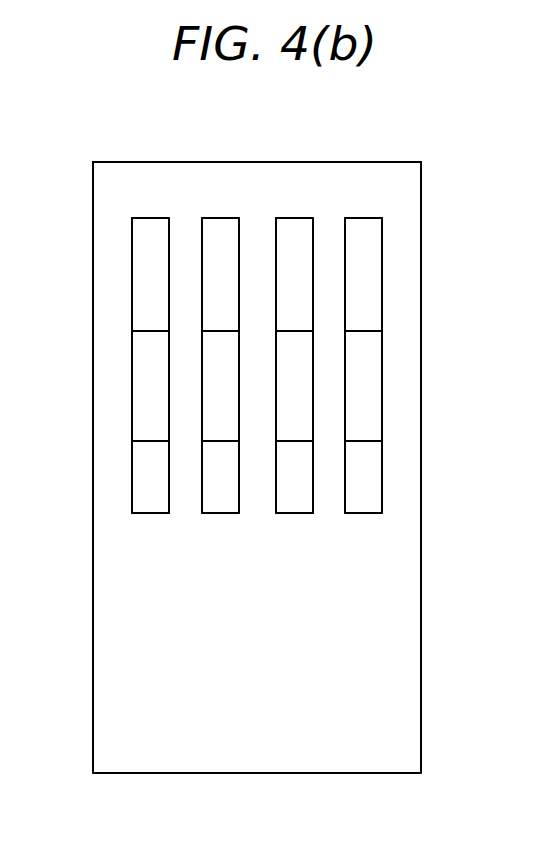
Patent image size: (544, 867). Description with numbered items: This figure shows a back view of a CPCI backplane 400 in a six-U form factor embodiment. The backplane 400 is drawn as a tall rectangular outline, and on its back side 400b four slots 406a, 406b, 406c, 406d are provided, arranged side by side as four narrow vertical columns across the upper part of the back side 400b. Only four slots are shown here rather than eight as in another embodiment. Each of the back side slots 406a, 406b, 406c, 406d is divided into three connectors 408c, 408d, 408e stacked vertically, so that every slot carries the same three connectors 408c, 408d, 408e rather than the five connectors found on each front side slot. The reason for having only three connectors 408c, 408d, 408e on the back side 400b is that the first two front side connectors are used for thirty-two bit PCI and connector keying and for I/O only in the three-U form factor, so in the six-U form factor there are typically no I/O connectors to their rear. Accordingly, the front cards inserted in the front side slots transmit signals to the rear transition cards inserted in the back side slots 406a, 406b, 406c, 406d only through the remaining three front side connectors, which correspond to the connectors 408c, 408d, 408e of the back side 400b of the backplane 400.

The backplane 400 is at (163, 162).
The back side 400b is at (275, 167).
The slot 406a is at (363, 492).
The slot 406b is at (293, 492).
The slot 406c is at (220, 492).
The slot 406d is at (150, 492).
The connector 408c is at (212, 488).
The connector 408d is at (135, 408).
The connector 408e is at (135, 296).